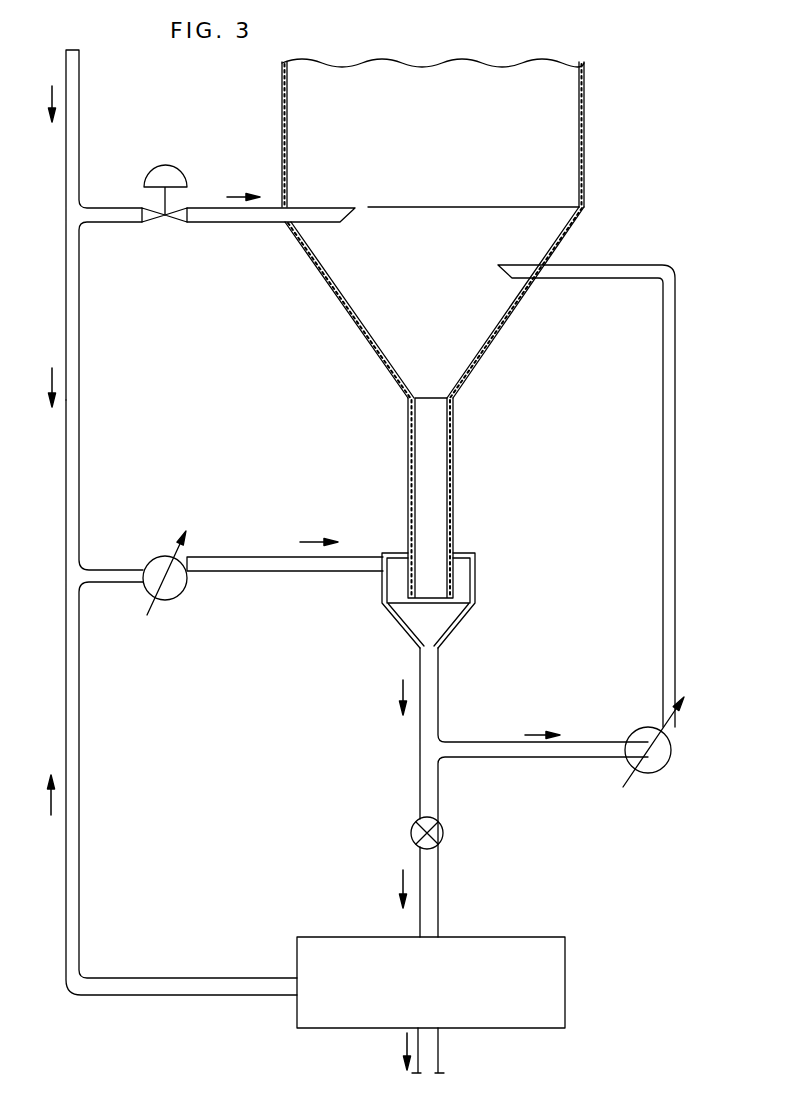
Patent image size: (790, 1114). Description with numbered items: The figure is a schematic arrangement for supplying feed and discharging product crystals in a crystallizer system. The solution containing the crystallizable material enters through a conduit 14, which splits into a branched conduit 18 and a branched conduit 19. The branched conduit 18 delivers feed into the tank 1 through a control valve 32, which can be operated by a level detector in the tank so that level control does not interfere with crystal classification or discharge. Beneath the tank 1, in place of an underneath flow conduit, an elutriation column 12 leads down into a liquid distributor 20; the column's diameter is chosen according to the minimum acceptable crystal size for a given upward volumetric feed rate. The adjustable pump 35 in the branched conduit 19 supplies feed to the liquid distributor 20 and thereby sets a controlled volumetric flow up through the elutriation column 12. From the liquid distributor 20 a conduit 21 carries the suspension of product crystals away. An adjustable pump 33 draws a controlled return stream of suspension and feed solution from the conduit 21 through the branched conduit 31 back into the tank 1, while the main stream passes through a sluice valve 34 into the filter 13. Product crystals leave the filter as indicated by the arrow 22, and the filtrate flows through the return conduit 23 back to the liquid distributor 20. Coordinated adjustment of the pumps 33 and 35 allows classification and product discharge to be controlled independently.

The tank 1 is at (441, 181).
The elutriation column 12 is at (408, 460).
The filter 13 is at (431, 996).
The conduit 14 is at (76, 56).
The branched conduit 18 is at (240, 220).
The branched conduit 19 is at (297, 571).
The liquid distributor 20 is at (475, 600).
The conduit 21 is at (420, 748).
The product crystals 22 is at (438, 1055).
The return conduit 23 is at (80, 784).
The branched conduit 31 is at (674, 490).
The control valve 32 is at (178, 223).
The adjustable pump 33 is at (672, 753).
The sluice valve 34 is at (443, 833).
The adjustable pump 35 is at (160, 560).